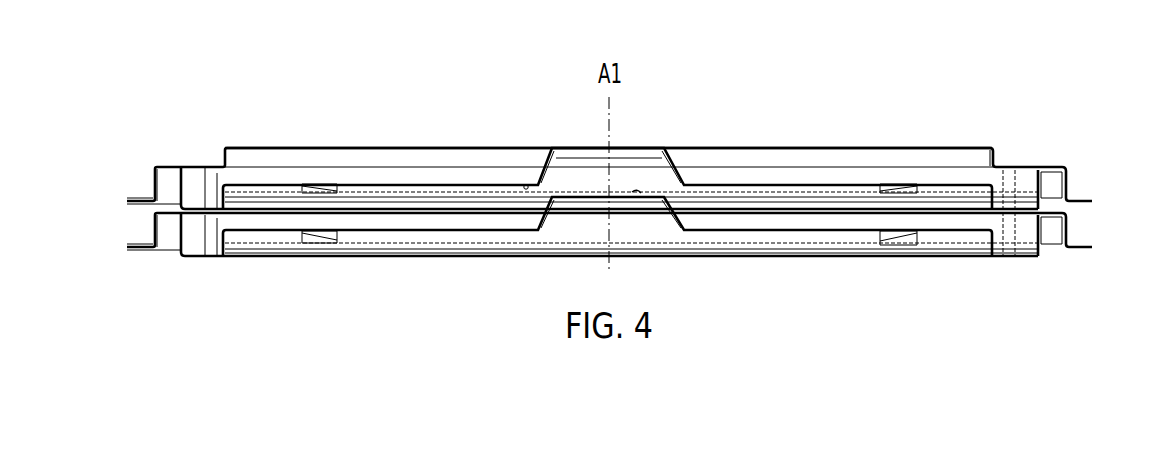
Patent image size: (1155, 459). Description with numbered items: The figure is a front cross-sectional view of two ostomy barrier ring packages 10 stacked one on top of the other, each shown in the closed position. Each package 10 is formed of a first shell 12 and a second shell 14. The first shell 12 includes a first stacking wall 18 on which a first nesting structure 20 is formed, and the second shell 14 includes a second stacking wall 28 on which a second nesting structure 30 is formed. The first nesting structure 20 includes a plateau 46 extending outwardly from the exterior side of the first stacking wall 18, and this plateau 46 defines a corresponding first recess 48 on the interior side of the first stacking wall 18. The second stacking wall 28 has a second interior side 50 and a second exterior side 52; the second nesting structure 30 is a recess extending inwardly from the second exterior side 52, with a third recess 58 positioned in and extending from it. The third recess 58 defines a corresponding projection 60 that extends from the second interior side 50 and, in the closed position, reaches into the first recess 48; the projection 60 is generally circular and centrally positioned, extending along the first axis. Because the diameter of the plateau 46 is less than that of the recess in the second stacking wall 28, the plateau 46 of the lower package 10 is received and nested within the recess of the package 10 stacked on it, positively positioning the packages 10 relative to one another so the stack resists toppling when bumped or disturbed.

The package 10 is at (1098, 159).
The first shell 12 is at (170, 164).
The second shell 14 is at (181, 192).
The first stacking wall 18 is at (1046, 170).
The first nesting structure 20 is at (995, 165).
The second stacking wall 28 is at (1011, 209).
The second nesting structure 30 is at (895, 233).
The plateau 46 is at (718, 191).
The first recess 48 is at (479, 151).
The second interior side 50 is at (468, 228).
The second exterior side 52 is at (524, 185).
The third recess 58 is at (552, 152).
The projection 60 is at (686, 152).